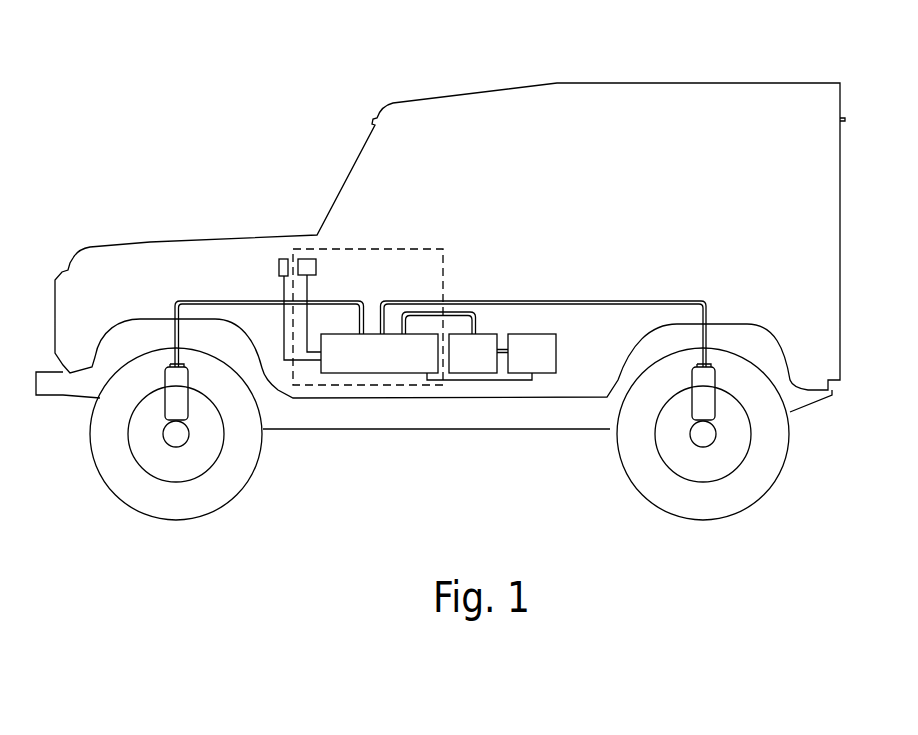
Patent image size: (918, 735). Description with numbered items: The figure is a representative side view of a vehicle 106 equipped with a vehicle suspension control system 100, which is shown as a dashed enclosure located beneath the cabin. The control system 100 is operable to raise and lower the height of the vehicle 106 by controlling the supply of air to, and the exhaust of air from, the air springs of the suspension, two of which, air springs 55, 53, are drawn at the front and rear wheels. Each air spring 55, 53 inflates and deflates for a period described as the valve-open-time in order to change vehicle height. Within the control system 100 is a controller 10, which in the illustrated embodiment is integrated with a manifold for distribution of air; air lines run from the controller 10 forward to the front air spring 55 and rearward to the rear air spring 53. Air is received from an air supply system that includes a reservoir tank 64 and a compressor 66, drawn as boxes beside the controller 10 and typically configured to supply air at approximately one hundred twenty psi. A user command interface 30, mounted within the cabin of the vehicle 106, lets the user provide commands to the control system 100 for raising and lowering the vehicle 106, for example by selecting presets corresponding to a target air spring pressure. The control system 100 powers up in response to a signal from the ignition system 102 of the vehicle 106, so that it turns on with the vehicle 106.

The vehicle 106 is at (724, 83).
The vehicle suspension control system 100 is at (397, 248).
The ignition system 102 is at (284, 259).
The user command interface 30 is at (307, 259).
The controller 10 is at (377, 373).
The reservoir tank 64 is at (468, 373).
The compressor 66 is at (543, 373).
The air spring 55 is at (188, 380).
The air spring 53 is at (692, 379).